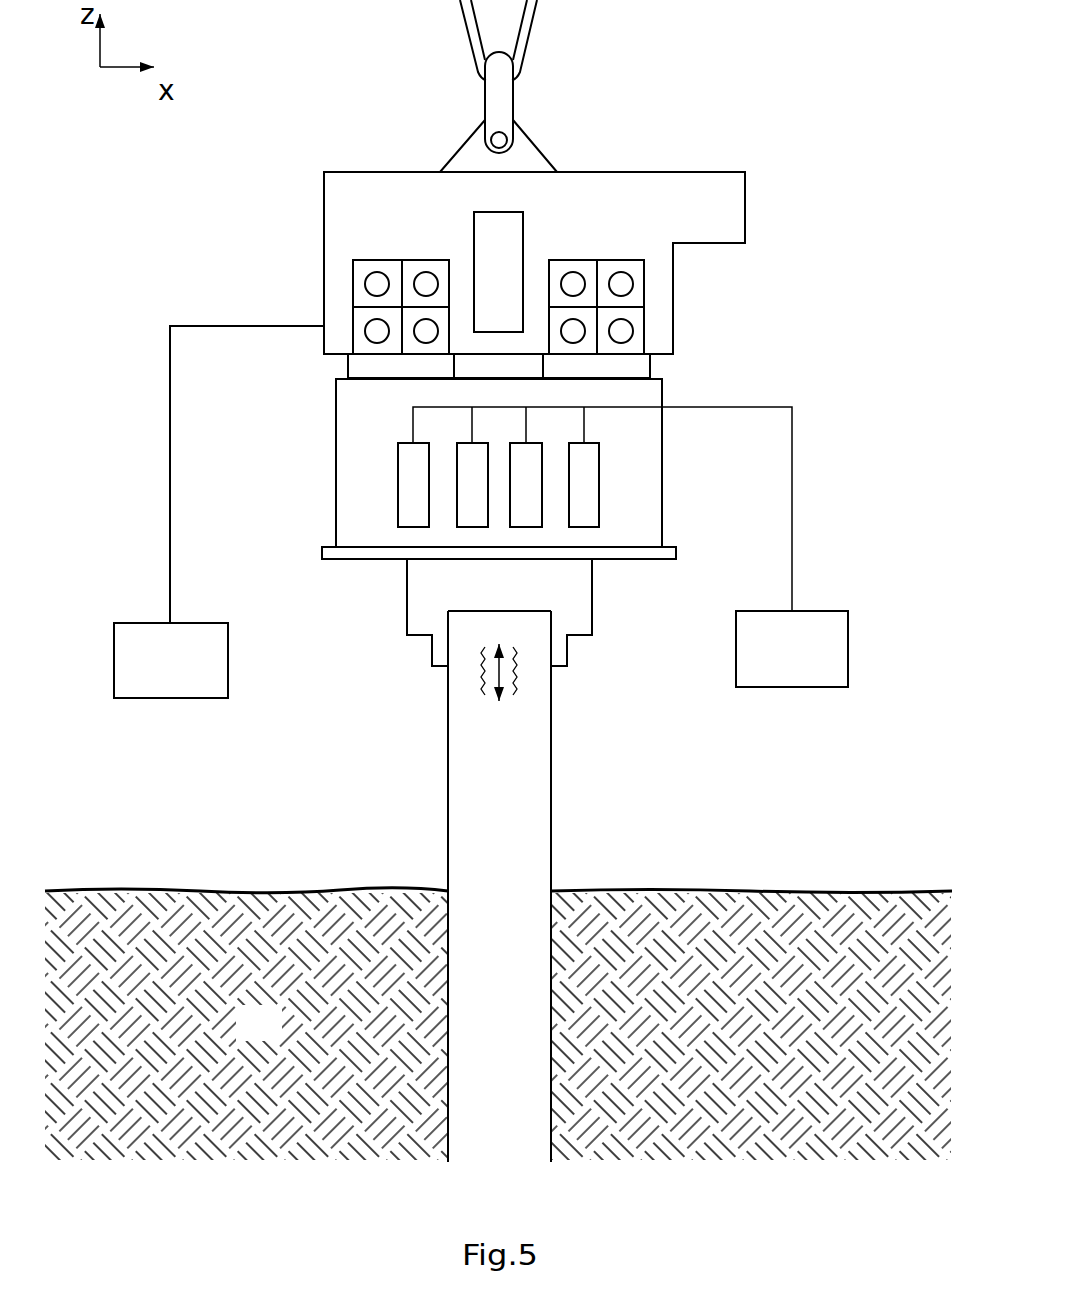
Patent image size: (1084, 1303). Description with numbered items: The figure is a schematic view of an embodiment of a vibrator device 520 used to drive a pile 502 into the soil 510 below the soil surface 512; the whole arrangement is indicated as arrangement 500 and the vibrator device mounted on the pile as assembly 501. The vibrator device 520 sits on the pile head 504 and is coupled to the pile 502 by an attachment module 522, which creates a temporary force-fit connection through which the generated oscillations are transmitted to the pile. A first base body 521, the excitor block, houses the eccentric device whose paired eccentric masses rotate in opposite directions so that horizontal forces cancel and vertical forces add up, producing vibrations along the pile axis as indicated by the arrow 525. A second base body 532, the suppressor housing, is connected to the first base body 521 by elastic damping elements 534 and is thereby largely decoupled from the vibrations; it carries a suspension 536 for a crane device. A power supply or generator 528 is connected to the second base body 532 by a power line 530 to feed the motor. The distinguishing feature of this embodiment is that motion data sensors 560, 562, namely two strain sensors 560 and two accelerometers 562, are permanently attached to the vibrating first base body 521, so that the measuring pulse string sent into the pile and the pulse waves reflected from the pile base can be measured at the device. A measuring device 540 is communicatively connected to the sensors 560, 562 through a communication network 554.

The pile driving system 500 is at (881, 70).
The pile driving device 501 is at (871, 377).
The pile 502 is at (447, 808).
The pile head 504 is at (425, 608).
The soil 510 is at (279, 1036).
The soil surface 512 is at (245, 890).
The vibrator device 520 is at (233, 224).
The first base body 521 is at (336, 503).
The attachment module 522 is at (592, 595).
The arrow 525 is at (463, 676).
The power supply 528 is at (192, 676).
The power line 530 is at (170, 473).
The second base body 532 is at (622, 172).
The damping elements 534 is at (380, 260).
The suspension 536 is at (485, 107).
The measuring device 540 is at (813, 666).
The communication network 554 is at (712, 407).
The strain sensors 560 is at (457, 493).
The accelerometers 562 is at (542, 500).